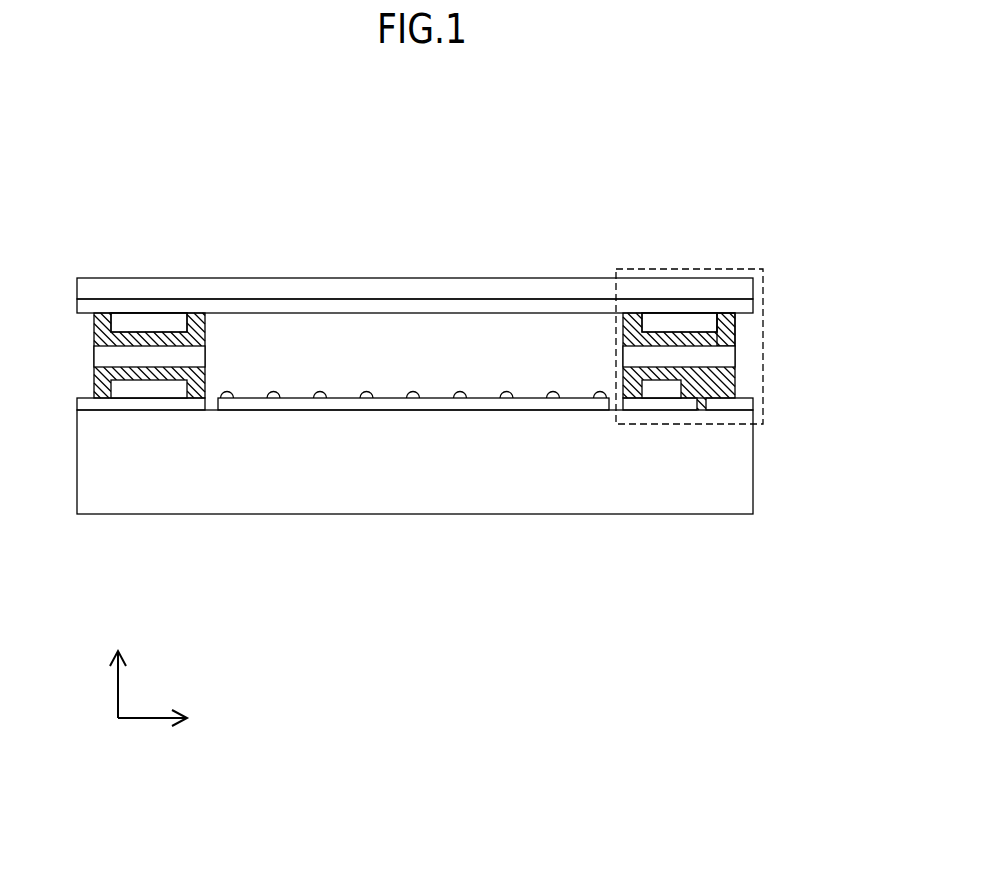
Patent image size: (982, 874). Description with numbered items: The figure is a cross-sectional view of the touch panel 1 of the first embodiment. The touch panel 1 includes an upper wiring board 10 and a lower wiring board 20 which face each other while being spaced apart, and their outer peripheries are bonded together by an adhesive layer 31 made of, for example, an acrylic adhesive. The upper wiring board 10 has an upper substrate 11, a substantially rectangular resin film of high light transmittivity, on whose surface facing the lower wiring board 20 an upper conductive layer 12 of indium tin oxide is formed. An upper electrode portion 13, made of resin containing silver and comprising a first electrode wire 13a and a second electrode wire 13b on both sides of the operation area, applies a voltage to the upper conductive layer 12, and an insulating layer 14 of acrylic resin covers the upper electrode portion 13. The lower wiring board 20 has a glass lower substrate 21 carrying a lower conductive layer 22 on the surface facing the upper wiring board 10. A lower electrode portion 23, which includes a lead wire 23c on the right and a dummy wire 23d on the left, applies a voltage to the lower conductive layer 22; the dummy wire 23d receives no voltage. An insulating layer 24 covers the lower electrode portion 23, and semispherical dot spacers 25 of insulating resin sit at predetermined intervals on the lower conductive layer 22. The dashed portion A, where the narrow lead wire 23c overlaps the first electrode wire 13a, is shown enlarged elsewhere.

The touch panel 1 is at (63, 137).
The upper wiring board 10 is at (785, 214).
The upper substrate 11 is at (541, 292).
The upper conductive layer 12 is at (592, 306).
The upper electrode portion 13 is at (415, 272).
The first electrode wire 13a is at (677, 323).
The second electrode wire 13b is at (150, 323).
The insulating layer 14 is at (728, 318).
The lower wiring board 20 is at (780, 566).
The lower substrate 21 is at (488, 503).
The lower conductive layer 22 is at (553, 402).
The lower electrode portion 23 is at (408, 475).
The lead wire 23c is at (661, 386).
The dummy wire 23d is at (149, 388).
The insulating layer 24 is at (713, 400).
The dot spacers 25 is at (600, 398).
The adhesive layer 31 is at (727, 357).
The portion A is at (763, 285).